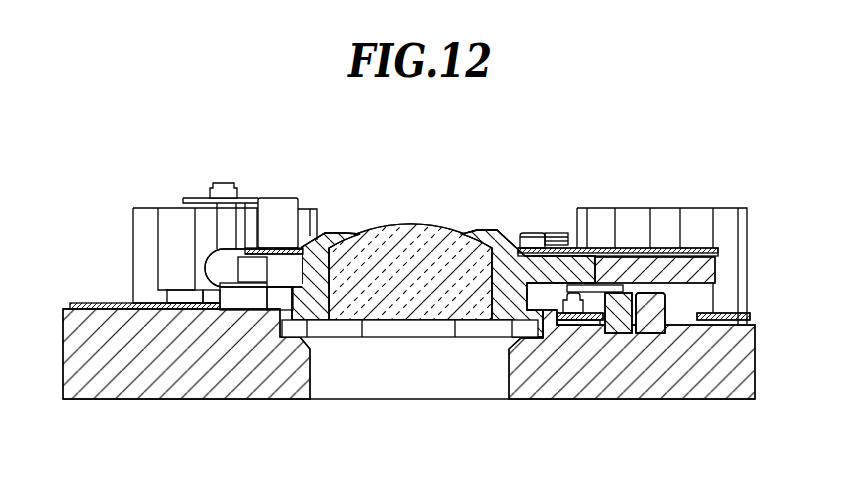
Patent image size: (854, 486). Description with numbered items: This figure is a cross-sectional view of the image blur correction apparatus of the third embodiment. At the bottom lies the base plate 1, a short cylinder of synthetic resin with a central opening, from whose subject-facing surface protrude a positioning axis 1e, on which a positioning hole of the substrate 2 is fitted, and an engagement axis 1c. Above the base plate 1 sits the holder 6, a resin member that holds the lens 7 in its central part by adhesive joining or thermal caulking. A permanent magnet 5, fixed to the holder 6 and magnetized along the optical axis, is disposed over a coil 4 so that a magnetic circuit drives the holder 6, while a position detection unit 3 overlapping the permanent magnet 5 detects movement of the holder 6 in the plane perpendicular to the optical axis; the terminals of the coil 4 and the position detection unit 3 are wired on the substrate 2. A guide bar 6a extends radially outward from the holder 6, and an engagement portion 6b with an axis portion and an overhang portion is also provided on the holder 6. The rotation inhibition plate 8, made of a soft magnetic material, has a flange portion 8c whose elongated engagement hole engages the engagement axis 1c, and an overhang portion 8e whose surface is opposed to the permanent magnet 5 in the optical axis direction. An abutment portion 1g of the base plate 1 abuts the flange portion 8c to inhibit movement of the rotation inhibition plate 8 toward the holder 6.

The base plate 1 is at (226, 400).
The engagement axis 1c is at (222, 183).
The positioning axis 1e is at (647, 300).
The abutment portion 1g is at (245, 207).
The substrate 2 is at (710, 318).
The position detection unit 3 is at (595, 303).
The coil 4 is at (618, 300).
The permanent magnet 5 is at (638, 256).
The holder 6 is at (318, 243).
The guide bar 6a is at (215, 266).
The engagement portion 6b is at (530, 236).
The lens 7 is at (395, 235).
The rotation inhibition plate 8 is at (282, 200).
The flange portion 8c is at (188, 197).
The overhang portion 8e is at (668, 253).